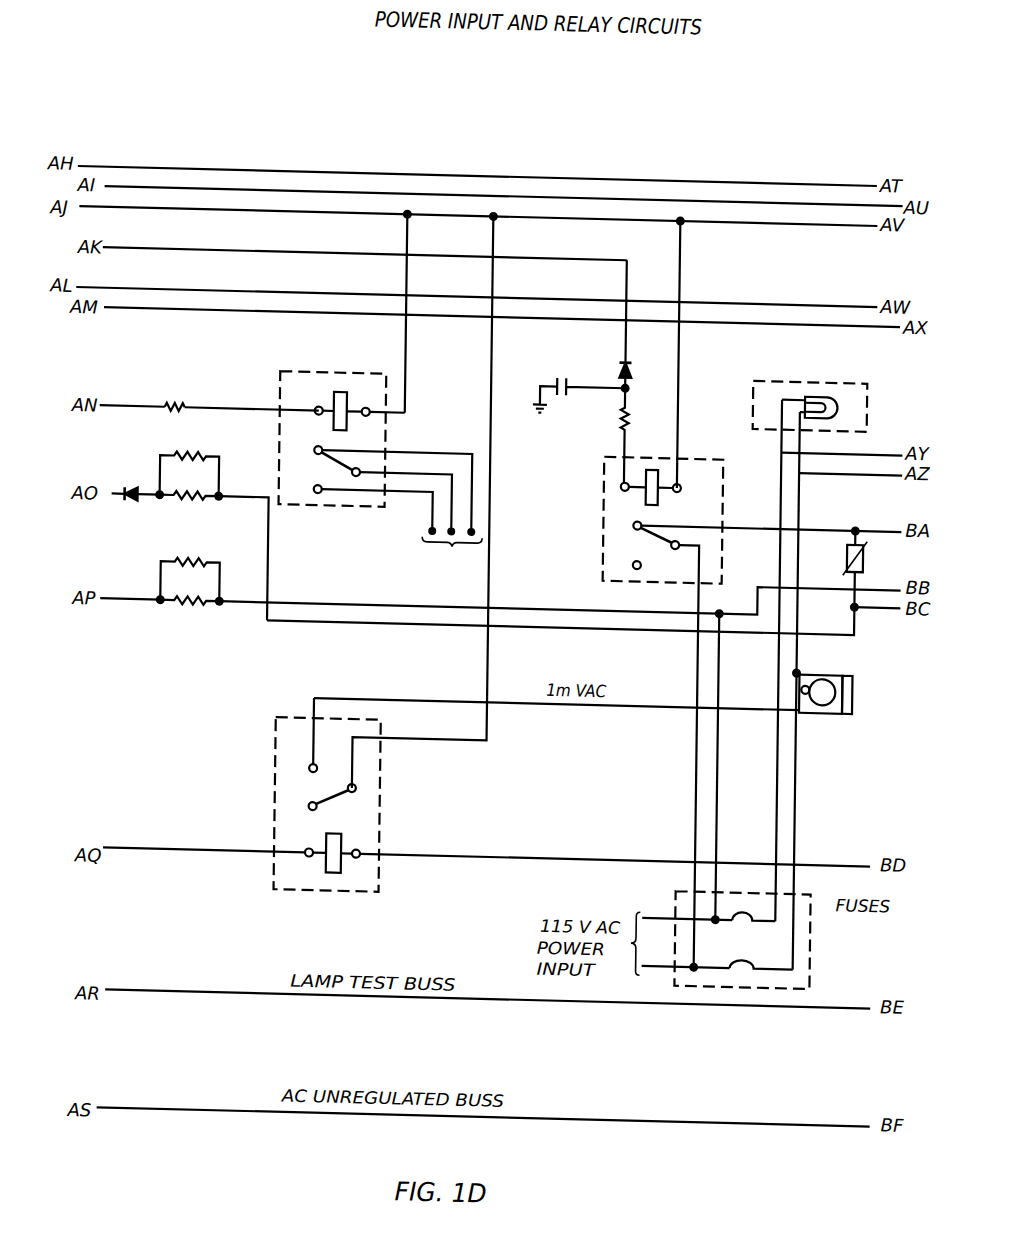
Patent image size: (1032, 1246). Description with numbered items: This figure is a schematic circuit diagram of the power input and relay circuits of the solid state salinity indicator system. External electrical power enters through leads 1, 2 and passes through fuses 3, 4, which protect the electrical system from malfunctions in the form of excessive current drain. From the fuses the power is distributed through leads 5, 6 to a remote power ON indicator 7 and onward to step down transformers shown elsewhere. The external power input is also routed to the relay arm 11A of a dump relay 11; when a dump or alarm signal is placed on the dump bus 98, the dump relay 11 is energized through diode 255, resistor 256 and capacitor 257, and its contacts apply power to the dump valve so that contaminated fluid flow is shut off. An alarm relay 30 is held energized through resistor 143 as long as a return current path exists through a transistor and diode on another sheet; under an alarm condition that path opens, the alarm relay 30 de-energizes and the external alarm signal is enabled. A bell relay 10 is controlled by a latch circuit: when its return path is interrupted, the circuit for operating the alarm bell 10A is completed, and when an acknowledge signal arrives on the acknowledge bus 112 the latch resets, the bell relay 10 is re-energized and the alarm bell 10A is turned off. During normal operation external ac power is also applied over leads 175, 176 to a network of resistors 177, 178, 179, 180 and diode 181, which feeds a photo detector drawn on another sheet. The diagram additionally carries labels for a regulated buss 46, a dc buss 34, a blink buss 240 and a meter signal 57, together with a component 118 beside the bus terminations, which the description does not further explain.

The meter signal line 57 is at (812, 160).
The regulated buss 46 is at (271, 178).
The DC buss 34 is at (213, 198).
The dump bus 98 is at (627, 240).
The blink buss 240 is at (613, 283).
The acknowledge bus 112 is at (598, 301).
The resistor 143 is at (184, 394).
The alarm relay 30 is at (358, 362).
The diode 181 is at (132, 483).
The resistor 177 is at (188, 494).
The resistor 179 is at (202, 449).
The lead 176 is at (592, 595).
The resistor 178 is at (189, 600).
The resistor 180 is at (203, 555).
The lead 175 is at (591, 619).
The diode 255 is at (638, 352).
The capacitor 257 is at (561, 360).
The resistor 256 is at (639, 398).
The dump relay 11 is at (606, 520).
The relay arm 11A is at (664, 527).
The varistor 118 is at (854, 534).
The remote power ON indicator 7 is at (820, 360).
The lead 6 is at (783, 725).
The lead 5 is at (808, 731).
The alarm bell 10A is at (846, 653).
The bell relay 10 is at (285, 884).
The lead 2 is at (682, 899).
The fuse 4 is at (752, 909).
The lead 1 is at (683, 947).
The fuse 3 is at (764, 943).